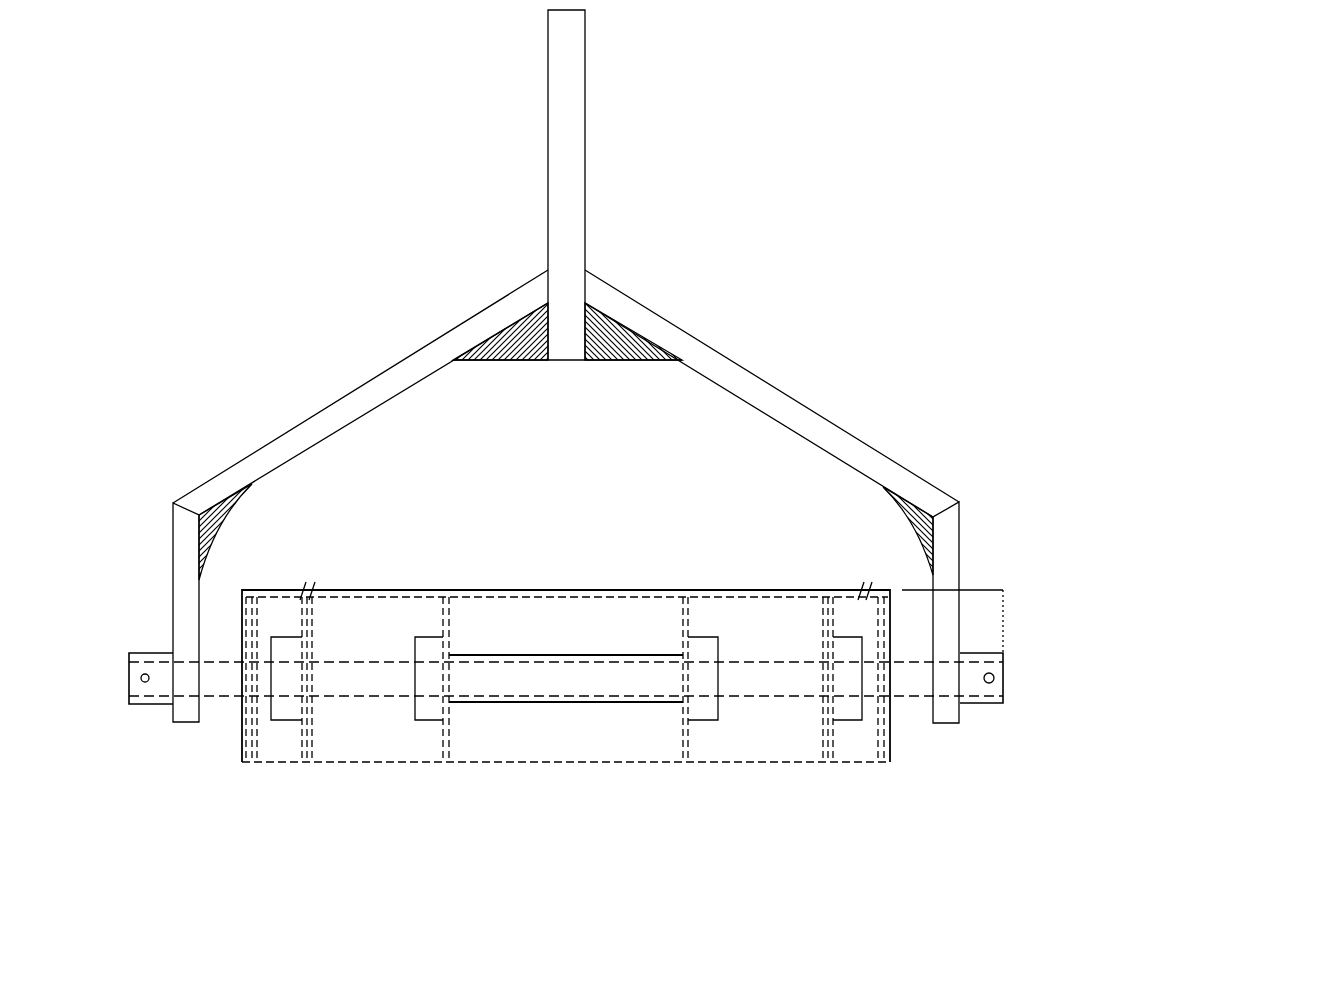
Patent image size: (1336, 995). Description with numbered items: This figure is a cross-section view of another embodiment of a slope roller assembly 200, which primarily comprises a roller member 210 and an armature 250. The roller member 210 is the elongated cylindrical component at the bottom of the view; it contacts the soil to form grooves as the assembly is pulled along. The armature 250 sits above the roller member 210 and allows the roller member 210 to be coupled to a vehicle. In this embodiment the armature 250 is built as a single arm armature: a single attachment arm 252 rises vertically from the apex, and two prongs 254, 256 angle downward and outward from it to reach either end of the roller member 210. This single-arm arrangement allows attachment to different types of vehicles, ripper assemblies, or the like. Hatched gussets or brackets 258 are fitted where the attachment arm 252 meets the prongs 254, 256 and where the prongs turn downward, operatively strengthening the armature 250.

The slope roller assembly 200 is at (197, 112).
The roller member 210 is at (556, 720).
The armature 250 is at (349, 339).
The single attachment arm 252 is at (564, 185).
The prong 254 is at (281, 450).
The prong 256 is at (835, 440).
The gussets or brackets 258 is at (603, 340).